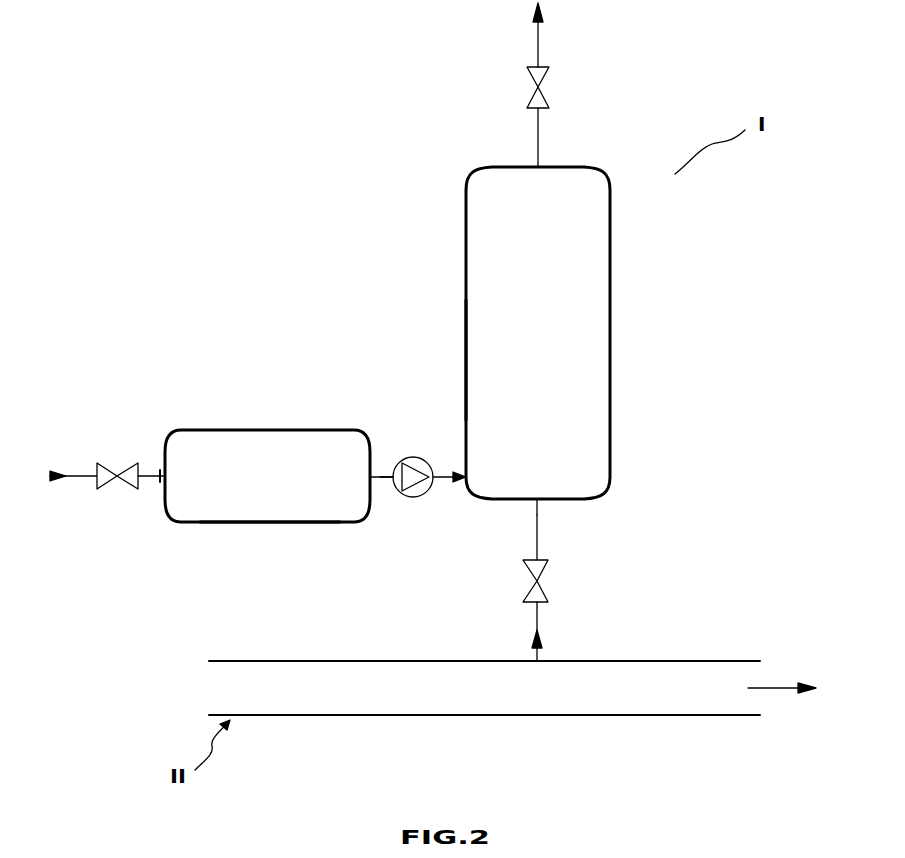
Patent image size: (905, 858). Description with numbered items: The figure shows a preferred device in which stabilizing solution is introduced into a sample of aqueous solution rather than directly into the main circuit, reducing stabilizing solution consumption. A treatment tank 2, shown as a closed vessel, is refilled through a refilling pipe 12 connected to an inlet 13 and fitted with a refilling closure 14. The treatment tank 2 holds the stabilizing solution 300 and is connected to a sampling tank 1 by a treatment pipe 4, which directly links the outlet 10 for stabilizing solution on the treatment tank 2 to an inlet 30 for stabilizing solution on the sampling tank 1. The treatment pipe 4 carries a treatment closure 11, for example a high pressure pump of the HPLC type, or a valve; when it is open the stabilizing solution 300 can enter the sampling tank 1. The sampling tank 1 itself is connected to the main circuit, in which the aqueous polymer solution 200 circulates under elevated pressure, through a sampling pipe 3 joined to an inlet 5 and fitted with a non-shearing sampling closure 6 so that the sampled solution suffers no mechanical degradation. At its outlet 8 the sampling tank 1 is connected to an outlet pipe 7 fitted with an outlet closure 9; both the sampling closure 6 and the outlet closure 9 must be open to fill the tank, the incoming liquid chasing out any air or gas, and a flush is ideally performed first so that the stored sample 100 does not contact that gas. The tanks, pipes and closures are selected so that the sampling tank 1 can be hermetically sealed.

The sampling tank 1 is at (580, 285).
The treatment tank 2 is at (273, 443).
The sampling pipe 3 is at (540, 527).
The treatment pipe 4 is at (384, 482).
The inlet 5 is at (535, 505).
The sampling closure 6 is at (531, 570).
The outlet pipe 7 is at (540, 45).
The outlet 8 is at (540, 165).
The outlet closure 9 is at (540, 75).
The outlet for stabilizing solution 10 is at (378, 475).
The treatment closure 11 is at (420, 460).
The refilling pipe 12 is at (148, 483).
The inlet 13 is at (148, 471).
The refilling closure 14 is at (104, 468).
The inlet for stabilizing solution 30 is at (468, 478).
The sample 100 is at (491, 228).
The aqueous polymer solution 200 is at (222, 690).
The stabilizing solution 300 is at (275, 512).